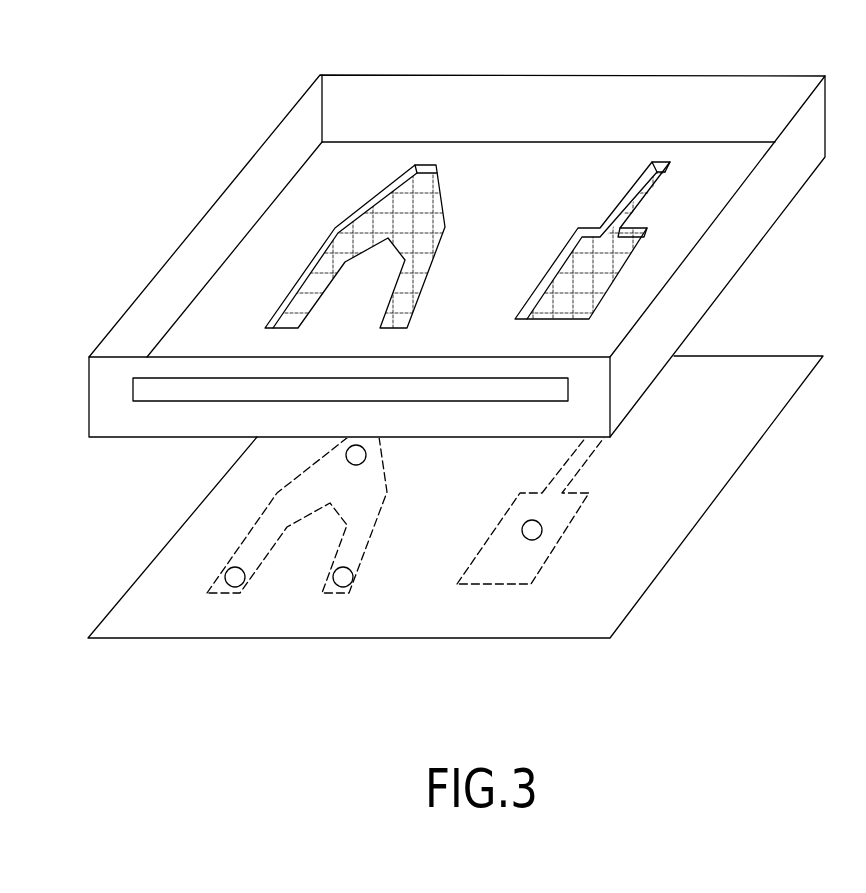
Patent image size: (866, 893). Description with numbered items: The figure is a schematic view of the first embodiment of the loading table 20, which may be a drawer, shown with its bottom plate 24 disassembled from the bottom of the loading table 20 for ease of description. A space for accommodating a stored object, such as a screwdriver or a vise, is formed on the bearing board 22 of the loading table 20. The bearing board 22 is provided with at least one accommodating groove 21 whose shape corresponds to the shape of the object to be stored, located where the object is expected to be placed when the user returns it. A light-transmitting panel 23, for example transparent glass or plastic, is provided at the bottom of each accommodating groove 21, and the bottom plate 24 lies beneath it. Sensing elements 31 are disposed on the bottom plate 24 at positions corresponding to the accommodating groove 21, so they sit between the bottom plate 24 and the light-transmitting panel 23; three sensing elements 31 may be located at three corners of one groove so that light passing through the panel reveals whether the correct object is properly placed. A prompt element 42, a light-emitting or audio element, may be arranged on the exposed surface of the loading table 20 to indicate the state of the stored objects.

The loading table 20 is at (283, 84).
The accommodating groove 21 is at (425, 163).
The bearing board 22 is at (240, 297).
The light-transmitting panel 23 is at (345, 245).
The bottom plate 24 is at (747, 433).
The sensing element 31 is at (355, 456).
The prompt element 42 is at (142, 390).